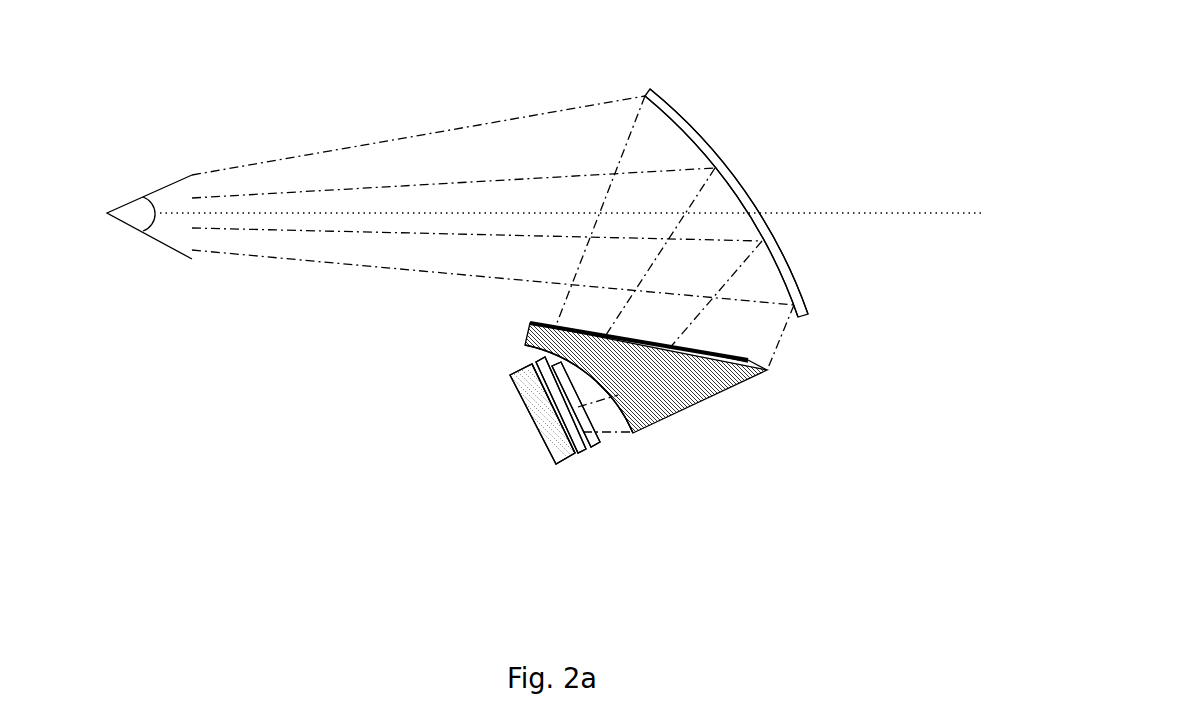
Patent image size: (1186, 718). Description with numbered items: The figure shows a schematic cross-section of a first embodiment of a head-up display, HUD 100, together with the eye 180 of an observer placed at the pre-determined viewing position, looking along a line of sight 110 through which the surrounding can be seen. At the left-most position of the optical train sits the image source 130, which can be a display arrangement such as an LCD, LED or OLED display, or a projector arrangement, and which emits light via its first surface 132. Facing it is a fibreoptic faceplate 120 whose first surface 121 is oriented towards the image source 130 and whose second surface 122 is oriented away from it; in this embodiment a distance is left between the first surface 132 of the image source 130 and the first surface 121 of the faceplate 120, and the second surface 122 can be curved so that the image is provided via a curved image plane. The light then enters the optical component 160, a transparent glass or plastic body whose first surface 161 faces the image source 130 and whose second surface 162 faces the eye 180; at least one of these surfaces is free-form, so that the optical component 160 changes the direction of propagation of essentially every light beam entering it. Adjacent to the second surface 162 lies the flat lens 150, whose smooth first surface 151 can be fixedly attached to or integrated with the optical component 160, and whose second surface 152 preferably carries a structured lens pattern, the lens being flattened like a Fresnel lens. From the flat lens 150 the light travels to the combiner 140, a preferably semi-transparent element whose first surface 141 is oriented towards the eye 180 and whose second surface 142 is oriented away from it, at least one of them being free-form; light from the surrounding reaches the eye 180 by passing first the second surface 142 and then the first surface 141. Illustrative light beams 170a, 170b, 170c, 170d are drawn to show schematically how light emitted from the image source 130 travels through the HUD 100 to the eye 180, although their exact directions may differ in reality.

The HUD 100 is at (840, 502).
The line of sight 110 is at (1023, 257).
The fibreoptic faceplate 120 is at (535, 357).
The first surface of the faceplate 121 is at (542, 375).
The second surface of the faceplate 122 is at (567, 393).
The image source 130 is at (548, 428).
The first surface of the image source 132 is at (543, 392).
The combiner 140 is at (643, 92).
The first surface of the combiner 141 is at (696, 141).
The second surface of the combiner 142 is at (708, 138).
The flat lens 150 is at (675, 350).
The first surface of the flat lens 151 is at (765, 371).
The second surface of the flat lens 152 is at (745, 359).
The optical component 160 is at (643, 412).
The first surface of the optical component 161 is at (627, 405).
The second surface of the optical component 162 is at (720, 363).
The light beam 170a is at (607, 202).
The light beam 170b is at (688, 205).
The light beam 170c is at (713, 238).
The light beam 170d is at (888, 279).
The eye 180 is at (175, 177).